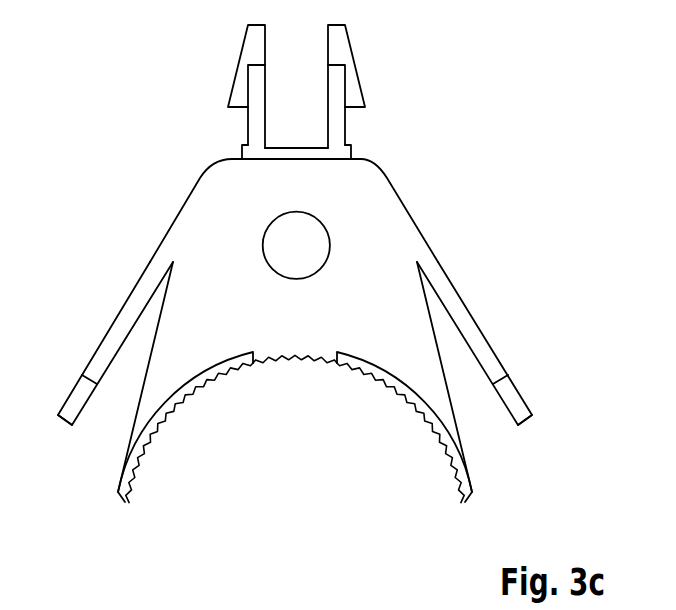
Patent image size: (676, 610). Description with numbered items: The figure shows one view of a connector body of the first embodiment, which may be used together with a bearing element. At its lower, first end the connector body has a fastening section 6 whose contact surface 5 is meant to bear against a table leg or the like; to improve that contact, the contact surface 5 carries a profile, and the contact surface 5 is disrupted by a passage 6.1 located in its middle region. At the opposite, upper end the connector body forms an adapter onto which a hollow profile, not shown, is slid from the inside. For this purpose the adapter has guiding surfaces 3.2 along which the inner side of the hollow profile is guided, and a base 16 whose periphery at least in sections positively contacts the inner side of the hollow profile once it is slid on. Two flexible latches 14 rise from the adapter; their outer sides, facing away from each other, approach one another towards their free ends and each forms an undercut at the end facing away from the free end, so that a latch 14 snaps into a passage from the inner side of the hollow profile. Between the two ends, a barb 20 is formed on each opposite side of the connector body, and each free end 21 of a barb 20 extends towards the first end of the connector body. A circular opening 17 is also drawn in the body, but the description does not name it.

The contact surface 5 is at (432, 430).
The fastening section 6 is at (282, 476).
The passage 6.1 is at (302, 350).
The flexible latch 14 is at (254, 33).
The guiding surfaces 3.2 is at (256, 118).
The base 16 is at (349, 146).
The hole 17 is at (287, 245).
The barb 20 is at (478, 333).
The free end 21 is at (528, 425).